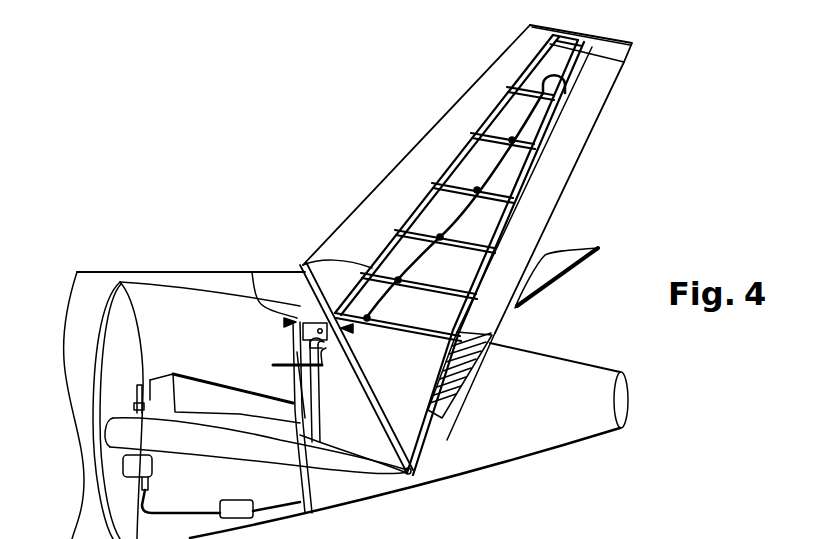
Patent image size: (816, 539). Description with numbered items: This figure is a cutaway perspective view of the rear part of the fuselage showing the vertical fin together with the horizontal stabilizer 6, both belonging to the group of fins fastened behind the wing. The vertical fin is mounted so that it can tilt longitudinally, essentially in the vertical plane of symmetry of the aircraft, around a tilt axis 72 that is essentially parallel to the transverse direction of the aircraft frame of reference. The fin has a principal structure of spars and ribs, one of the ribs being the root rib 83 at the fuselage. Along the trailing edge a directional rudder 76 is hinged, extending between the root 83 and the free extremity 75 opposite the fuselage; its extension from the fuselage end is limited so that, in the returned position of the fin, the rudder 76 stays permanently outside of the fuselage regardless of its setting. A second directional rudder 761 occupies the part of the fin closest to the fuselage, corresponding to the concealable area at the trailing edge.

The free extremity 75 is at (573, 30).
The directional rudder 76 is at (565, 150).
The second directional rudder 761 is at (472, 360).
The tilt axis 72 is at (291, 322).
The root rib 83 is at (428, 440).
The horizontal stabilizer 6 is at (322, 460).